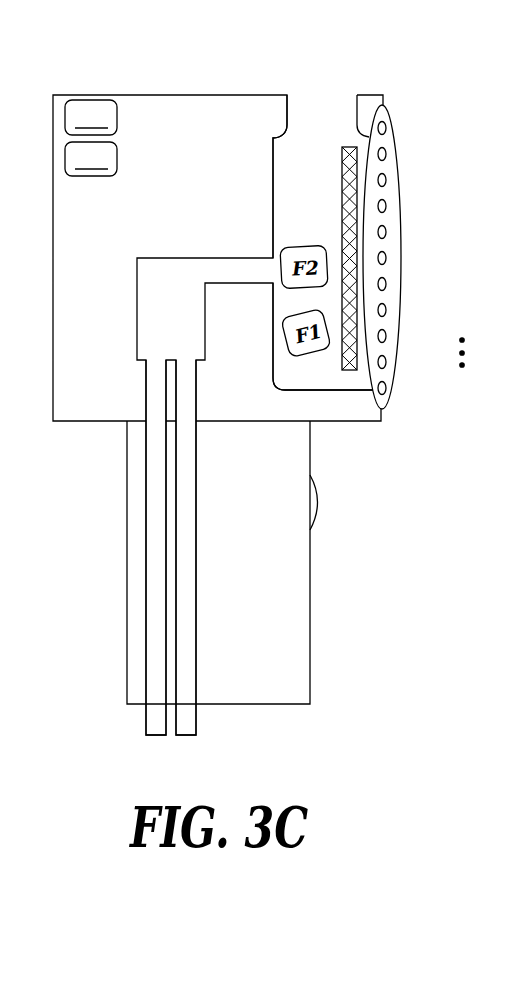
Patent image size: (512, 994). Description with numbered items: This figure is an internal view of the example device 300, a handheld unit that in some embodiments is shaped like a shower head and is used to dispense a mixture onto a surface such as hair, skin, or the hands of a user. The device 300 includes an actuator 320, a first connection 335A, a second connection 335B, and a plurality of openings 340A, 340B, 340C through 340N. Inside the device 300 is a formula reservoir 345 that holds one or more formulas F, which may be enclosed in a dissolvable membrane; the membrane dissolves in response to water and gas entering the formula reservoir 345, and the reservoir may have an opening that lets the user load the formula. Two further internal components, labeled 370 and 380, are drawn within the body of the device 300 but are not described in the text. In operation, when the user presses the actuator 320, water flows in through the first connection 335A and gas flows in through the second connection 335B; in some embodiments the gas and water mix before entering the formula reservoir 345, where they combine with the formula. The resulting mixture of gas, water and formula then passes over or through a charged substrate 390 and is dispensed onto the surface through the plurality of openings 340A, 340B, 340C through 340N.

The device 300 is at (46, 90).
The first component 370 is at (91, 117).
The second component 380 is at (91, 159).
The formula reservoir 345 is at (323, 142).
The opening 340A is at (388, 128).
The opening 340B is at (388, 154).
The opening 340C is at (388, 180).
The opening 340N is at (388, 386).
The charged substrate 390 is at (350, 372).
The actuator 320 is at (318, 500).
The first connection 335A is at (150, 720).
The second connection 335B is at (196, 720).